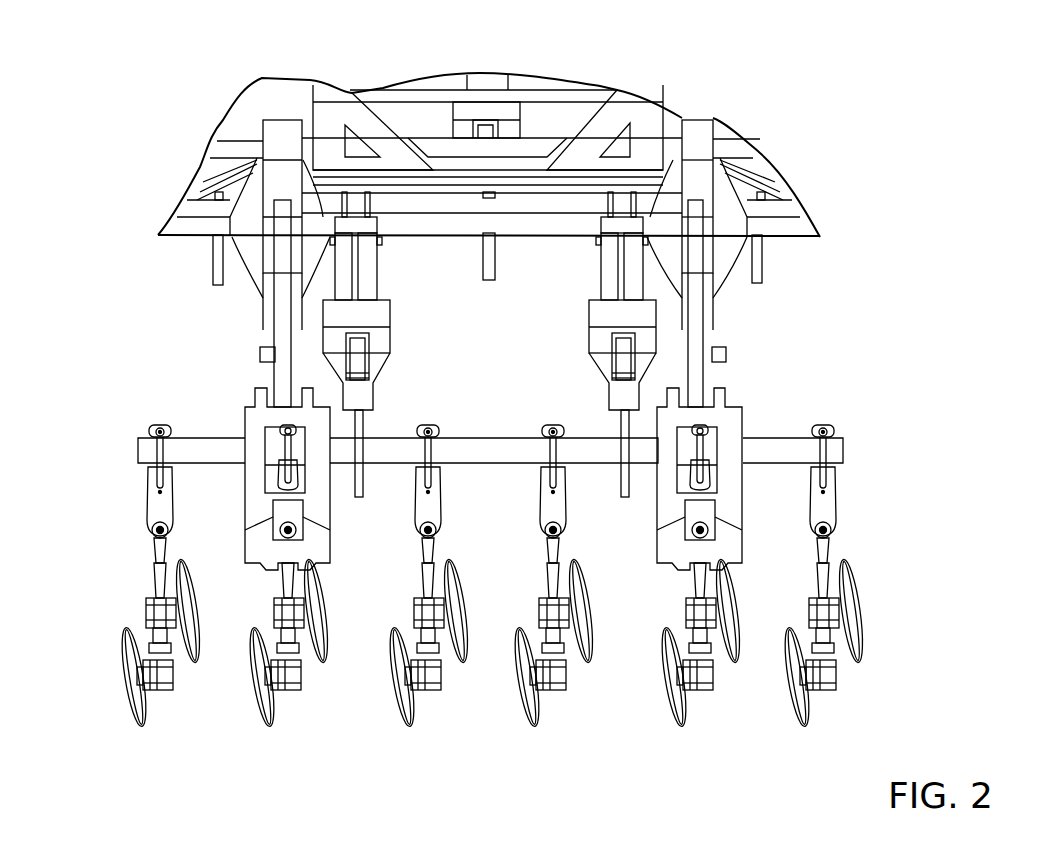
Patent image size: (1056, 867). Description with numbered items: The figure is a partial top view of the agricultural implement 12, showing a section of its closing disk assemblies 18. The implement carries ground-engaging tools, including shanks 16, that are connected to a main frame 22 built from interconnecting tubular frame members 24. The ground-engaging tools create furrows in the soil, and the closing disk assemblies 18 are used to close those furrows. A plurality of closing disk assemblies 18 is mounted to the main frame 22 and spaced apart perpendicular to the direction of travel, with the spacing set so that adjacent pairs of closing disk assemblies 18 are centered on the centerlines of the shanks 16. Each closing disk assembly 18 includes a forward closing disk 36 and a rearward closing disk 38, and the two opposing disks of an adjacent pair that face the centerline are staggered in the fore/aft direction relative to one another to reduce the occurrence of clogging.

The agricultural implement 12 is at (866, 322).
The shanks 16 is at (215, 270).
The closing disk assemblies 18 is at (228, 717).
The main frame 22 is at (467, 432).
The tubular frame members 24 is at (763, 437).
The forward closing disk 36 is at (310, 583).
The rearward closing disk 38 is at (257, 703).